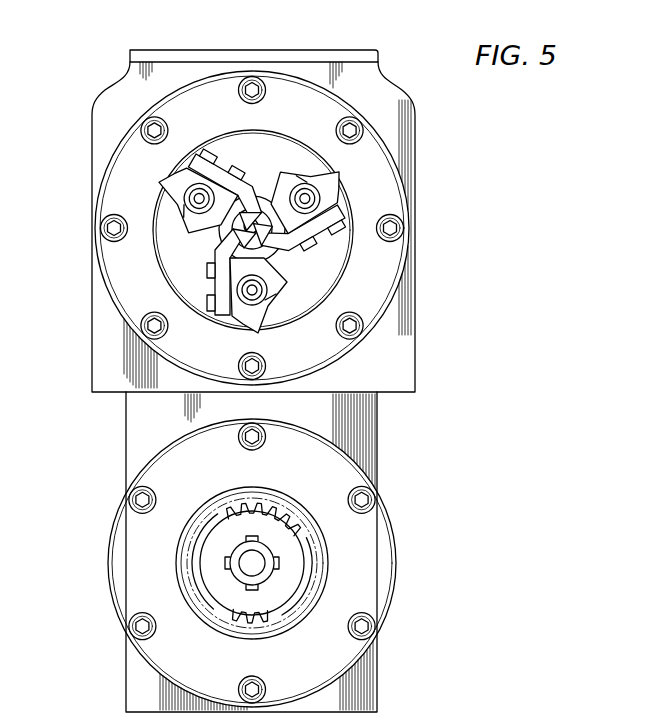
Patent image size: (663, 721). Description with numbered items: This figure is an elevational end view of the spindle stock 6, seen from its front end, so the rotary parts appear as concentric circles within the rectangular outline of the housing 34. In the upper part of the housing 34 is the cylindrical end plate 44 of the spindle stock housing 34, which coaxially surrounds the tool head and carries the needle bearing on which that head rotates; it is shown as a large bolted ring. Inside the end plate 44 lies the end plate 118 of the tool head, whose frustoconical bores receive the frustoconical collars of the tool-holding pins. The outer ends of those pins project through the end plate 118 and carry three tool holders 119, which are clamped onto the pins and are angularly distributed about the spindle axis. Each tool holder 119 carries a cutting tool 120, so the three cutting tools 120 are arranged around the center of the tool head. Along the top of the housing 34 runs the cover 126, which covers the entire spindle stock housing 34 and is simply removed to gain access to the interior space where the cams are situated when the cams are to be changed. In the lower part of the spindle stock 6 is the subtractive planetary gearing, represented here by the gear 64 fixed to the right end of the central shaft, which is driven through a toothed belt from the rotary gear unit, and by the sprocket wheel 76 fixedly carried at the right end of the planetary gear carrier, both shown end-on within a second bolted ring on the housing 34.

The spindle stock 6 is at (80, 429).
The housing 34 is at (100, 347).
The end plate 44 is at (110, 202).
The gear 64 is at (308, 545).
The sprocket wheel 76 is at (182, 573).
The end plate 118 is at (157, 268).
The tool holder 119 is at (157, 190).
The cutting tool 120 is at (249, 193).
The cover 126 is at (367, 54).